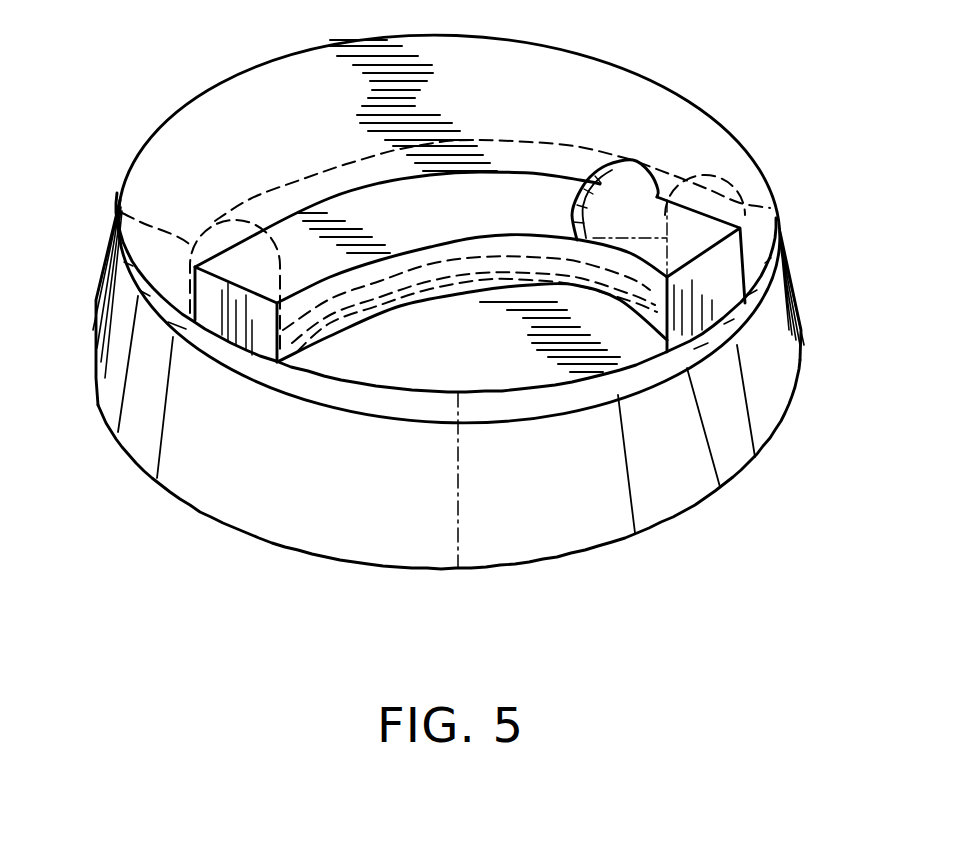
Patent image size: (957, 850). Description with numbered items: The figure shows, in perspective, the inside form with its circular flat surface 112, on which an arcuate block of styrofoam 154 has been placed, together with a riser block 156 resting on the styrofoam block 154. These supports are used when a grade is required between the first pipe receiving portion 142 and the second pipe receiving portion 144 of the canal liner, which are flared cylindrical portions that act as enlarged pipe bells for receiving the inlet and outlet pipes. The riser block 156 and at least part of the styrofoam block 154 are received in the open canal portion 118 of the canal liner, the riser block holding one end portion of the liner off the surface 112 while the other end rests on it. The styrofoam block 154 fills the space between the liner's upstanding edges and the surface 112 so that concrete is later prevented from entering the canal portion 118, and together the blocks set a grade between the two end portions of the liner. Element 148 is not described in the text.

The first flared cylindrical pipe receiving portion 142 is at (787, 222).
The second flared cylindrical pipe receiving portion 144 is at (118, 187).
The right rim portion 148 is at (775, 203).
The circular flat surface 112 is at (516, 377).
The arcuate block of styrofoam 154 is at (360, 218).
The riser block 156 is at (627, 187).
The canal portion 118 is at (273, 205).